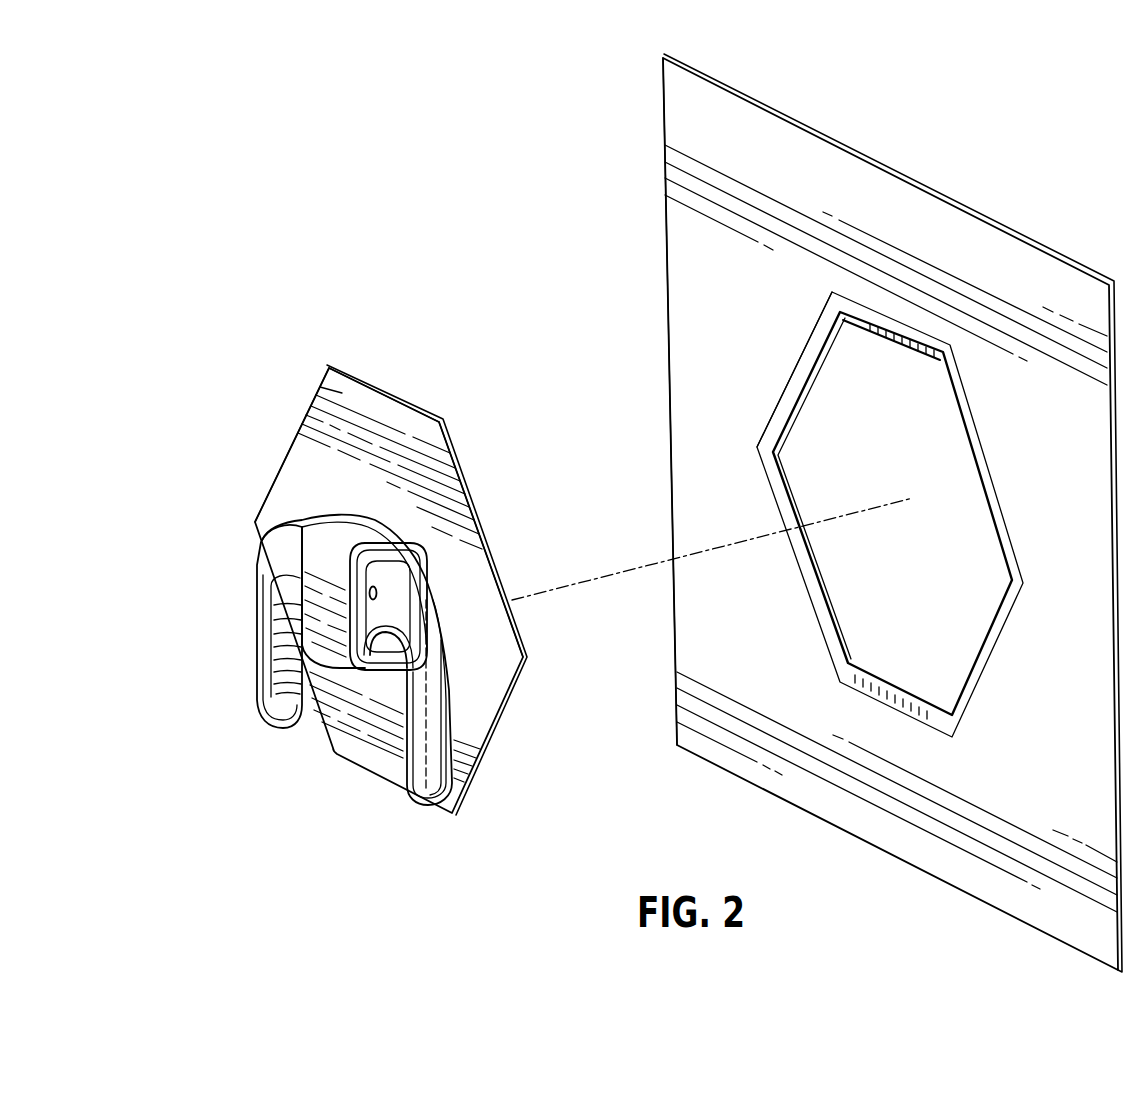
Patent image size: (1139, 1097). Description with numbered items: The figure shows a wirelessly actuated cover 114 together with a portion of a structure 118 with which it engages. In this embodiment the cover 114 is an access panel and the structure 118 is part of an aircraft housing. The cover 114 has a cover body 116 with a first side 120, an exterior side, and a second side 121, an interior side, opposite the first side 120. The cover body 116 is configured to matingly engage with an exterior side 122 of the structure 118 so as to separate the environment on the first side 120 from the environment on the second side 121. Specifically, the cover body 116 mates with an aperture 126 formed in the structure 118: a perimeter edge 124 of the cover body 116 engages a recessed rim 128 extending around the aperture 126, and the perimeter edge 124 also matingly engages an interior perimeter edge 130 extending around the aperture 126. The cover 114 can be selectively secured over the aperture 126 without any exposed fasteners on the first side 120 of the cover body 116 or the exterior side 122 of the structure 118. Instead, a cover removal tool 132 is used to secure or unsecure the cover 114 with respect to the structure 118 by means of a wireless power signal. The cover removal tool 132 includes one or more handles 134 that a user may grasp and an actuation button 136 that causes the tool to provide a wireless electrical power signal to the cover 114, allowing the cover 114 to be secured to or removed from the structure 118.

The wirelessly actuated cover 114 is at (268, 334).
The cover body 116 is at (300, 450).
The structure 118 is at (681, 127).
The first side 120 is at (268, 501).
The second side 121 is at (455, 455).
The exterior side 122 is at (682, 297).
The perimeter edge 124 is at (359, 383).
The aperture 126 is at (927, 378).
The recessed rim 128 is at (845, 302).
The interior perimeter edge 130 is at (812, 357).
The cover removal tool 132 is at (315, 566).
The handle 134 is at (260, 655).
The actuation button 136 is at (380, 595).